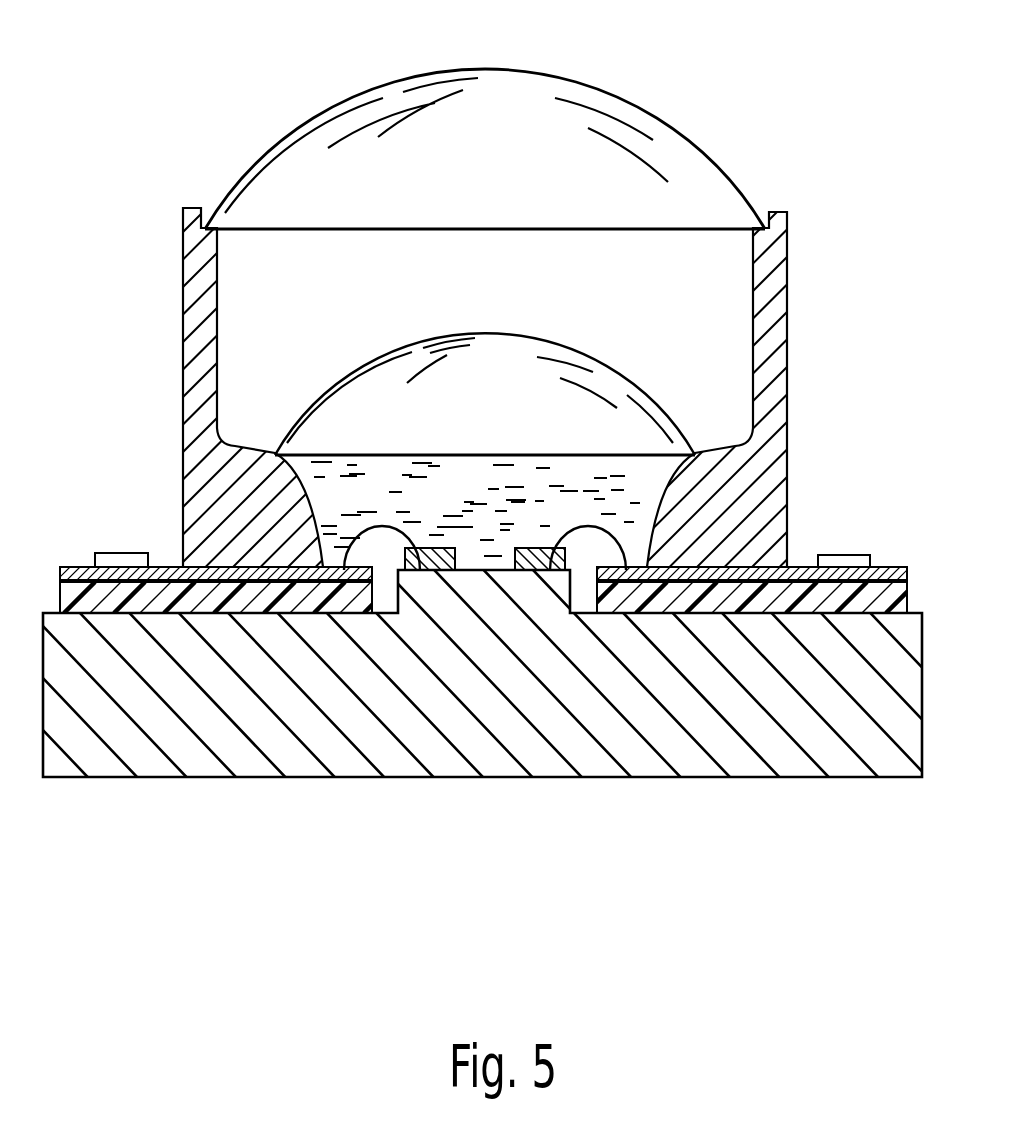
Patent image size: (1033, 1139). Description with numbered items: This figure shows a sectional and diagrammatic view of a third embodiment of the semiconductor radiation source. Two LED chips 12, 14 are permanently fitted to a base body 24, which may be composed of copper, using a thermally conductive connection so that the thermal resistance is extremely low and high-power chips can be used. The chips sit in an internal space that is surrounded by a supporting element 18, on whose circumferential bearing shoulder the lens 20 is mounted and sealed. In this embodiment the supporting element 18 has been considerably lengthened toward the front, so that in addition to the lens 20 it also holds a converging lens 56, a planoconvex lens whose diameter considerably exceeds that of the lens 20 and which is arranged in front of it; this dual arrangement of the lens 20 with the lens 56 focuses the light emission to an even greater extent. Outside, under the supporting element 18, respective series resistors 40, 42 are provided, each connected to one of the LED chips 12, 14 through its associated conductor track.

The LED chip 12 is at (432, 570).
The LED chip 14 is at (540, 570).
The supporting element 18 is at (770, 455).
The lens 20 is at (510, 417).
The base body 24 is at (763, 735).
The series resistor 40 is at (120, 553).
The series resistor 42 is at (845, 555).
The converging lens 56 is at (517, 100).